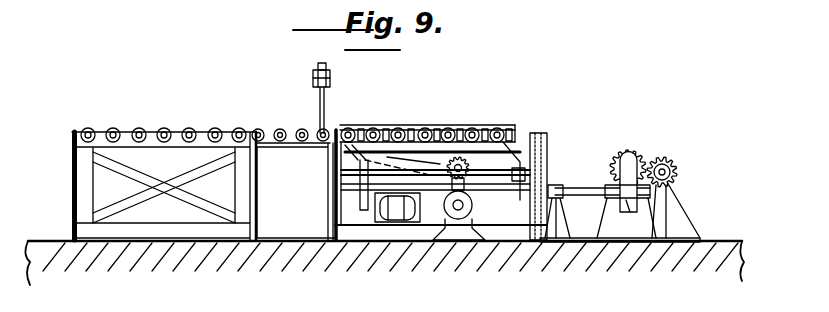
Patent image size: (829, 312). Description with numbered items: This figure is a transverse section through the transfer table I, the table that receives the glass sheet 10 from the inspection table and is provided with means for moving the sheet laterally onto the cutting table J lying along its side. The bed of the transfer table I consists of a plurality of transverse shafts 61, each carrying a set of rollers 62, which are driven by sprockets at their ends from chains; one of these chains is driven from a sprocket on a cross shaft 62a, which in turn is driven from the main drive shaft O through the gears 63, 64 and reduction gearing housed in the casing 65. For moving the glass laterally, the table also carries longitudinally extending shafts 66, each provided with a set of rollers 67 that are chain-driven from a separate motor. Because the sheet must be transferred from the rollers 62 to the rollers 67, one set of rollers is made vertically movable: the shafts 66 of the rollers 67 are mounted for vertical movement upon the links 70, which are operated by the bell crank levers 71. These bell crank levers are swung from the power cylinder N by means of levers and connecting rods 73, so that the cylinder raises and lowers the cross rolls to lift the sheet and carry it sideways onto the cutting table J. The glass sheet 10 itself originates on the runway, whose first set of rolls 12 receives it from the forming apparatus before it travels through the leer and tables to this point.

The cutting table J is at (82, 122).
The glass sheet 10 is at (362, 128).
The rollers 62 is at (397, 127).
The transverse shafts 61 is at (410, 128).
The rollers 67 is at (481, 124).
The longitudinally extending shafts 66 is at (494, 129).
The transfer table I is at (518, 119).
The links 70 is at (525, 118).
The connecting rods 73 is at (366, 174).
The set of rolls 12 is at (378, 190).
The power cylinder N is at (397, 222).
The bell crank levers 71 is at (503, 185).
The cross shaft 62a is at (597, 156).
The gear 64 is at (625, 150).
The casing 65 is at (631, 212).
The gear 63 is at (661, 157).
The main drive shaft O is at (665, 171).